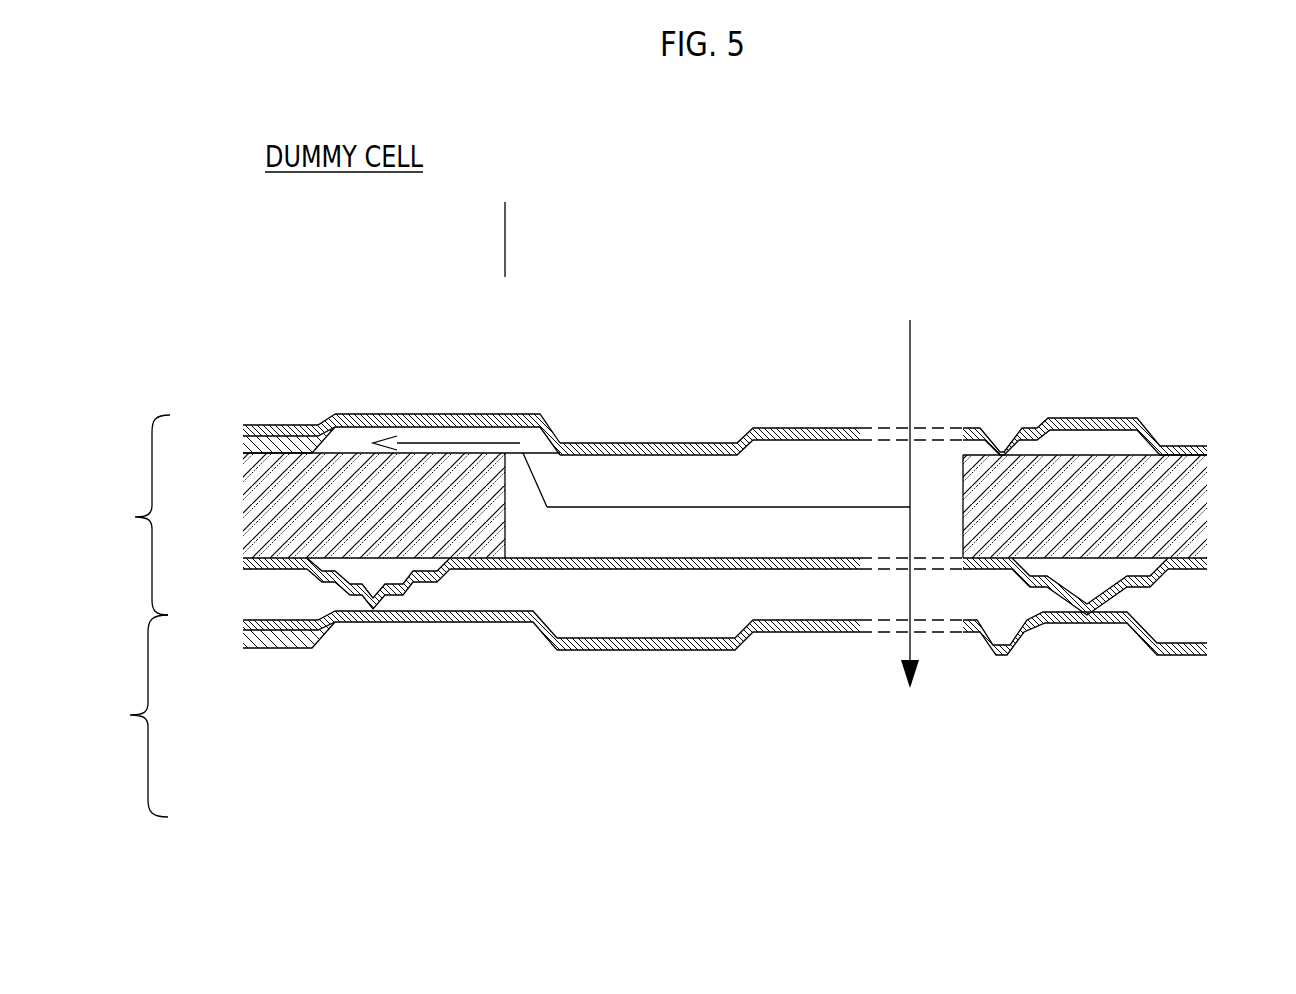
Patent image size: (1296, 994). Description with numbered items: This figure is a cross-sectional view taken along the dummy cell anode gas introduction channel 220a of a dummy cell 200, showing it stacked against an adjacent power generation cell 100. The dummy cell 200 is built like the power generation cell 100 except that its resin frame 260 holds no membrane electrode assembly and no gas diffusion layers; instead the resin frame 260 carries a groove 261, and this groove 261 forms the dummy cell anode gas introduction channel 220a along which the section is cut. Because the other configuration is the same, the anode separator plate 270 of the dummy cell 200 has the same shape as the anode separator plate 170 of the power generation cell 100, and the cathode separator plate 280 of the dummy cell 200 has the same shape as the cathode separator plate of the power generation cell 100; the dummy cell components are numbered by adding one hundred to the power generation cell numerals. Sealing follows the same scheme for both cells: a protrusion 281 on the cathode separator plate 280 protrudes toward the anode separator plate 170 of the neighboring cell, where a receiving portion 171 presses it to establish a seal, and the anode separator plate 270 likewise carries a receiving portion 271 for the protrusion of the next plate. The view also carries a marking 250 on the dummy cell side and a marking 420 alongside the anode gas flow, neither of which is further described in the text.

The power generation cell 100 is at (128, 716).
The anode separator plate 170 is at (1200, 655).
The receiving portion 171 is at (412, 627).
The dummy cell 200 is at (128, 515).
The dummy cell anode gas introduction channel 220a is at (687, 500).
The dummy cell 250 is at (503, 240).
The resin frame 260 is at (1143, 533).
The groove 261 is at (505, 535).
The anode separator plate 270 is at (1197, 446).
The receiving portion 271 is at (462, 405).
The cathode separator plate 280 is at (1197, 570).
The protrusion 281 is at (318, 600).
The anode gas supply manifold 420 is at (943, 393).